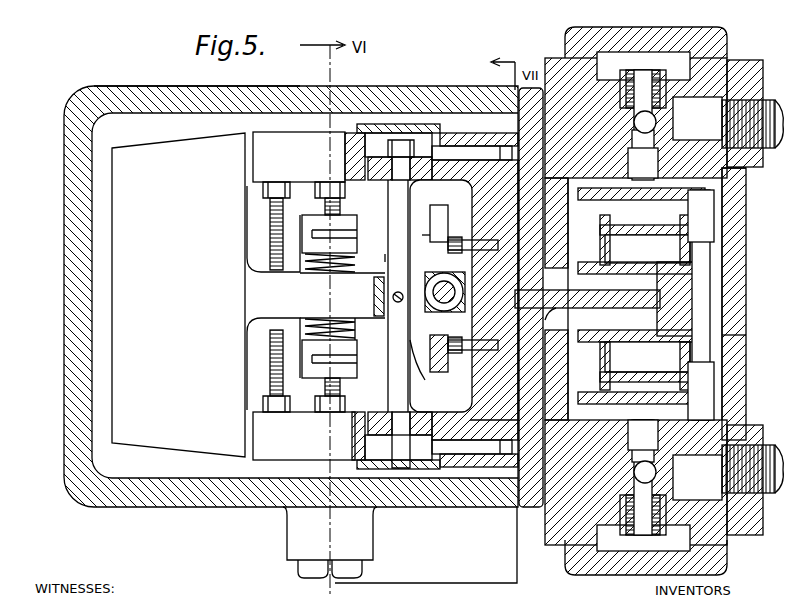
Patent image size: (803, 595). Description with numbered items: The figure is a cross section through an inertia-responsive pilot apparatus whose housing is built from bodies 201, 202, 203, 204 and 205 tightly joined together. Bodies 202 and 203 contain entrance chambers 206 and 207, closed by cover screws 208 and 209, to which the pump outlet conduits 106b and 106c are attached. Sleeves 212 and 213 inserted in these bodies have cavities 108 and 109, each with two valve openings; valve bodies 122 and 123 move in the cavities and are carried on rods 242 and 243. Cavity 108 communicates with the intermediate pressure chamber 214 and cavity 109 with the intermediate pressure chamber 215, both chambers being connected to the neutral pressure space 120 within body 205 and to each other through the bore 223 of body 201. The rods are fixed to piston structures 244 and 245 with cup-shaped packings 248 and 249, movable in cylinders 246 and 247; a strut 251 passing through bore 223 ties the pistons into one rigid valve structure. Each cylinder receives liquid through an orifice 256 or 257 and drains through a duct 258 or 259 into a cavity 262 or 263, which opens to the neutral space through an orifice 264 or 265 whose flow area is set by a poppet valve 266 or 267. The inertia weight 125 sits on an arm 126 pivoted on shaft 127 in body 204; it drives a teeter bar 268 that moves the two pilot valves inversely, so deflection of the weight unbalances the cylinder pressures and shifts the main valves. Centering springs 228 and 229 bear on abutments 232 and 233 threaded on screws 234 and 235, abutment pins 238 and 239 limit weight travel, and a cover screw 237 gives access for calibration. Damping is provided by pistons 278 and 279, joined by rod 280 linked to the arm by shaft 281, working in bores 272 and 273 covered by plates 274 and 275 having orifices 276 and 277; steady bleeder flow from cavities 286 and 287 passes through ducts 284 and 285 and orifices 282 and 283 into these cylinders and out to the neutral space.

The neutral pressure space 120 is at (238, 118).
The body 205 is at (226, 95).
The inertia weight 125 is at (115, 408).
The body 204 is at (352, 128).
The screw 234 is at (325, 185).
The abutment pin 238 is at (270, 232).
The abutment 232 is at (347, 228).
The centering spring 228 is at (313, 273).
The centering spring 229 is at (308, 330).
The abutment 233 is at (347, 370).
The screw 235 is at (325, 398).
The abutment pin 239 is at (270, 368).
The rod 280 is at (427, 252).
The shaft 281 is at (377, 299).
The arm 126 is at (378, 320).
The bore 272 is at (413, 140).
The orifice 276 is at (380, 126).
The plate 274 is at (400, 130).
The piston 278 is at (407, 171).
The orifice 282 is at (462, 128).
The duct 284 is at (472, 141).
The cavity 286 is at (478, 187).
The poppet valve 266 is at (470, 240).
The teeter bar 268 is at (423, 223).
The orifice 264 is at (482, 255).
The orifice 265 is at (500, 338).
The duct 258 is at (536, 280).
The pivot shaft 127 is at (440, 345).
The poppet valve 267 is at (431, 368).
The cavity 287 is at (494, 435).
The piston 279 is at (348, 428).
The orifice 277 is at (375, 468).
The plate 275 is at (405, 470).
The bore 273 is at (422, 452).
The orifice 283 is at (455, 456).
The duct 285 is at (488, 458).
The cover screw 237 is at (363, 568).
The body 202 is at (548, 70).
The cover screw 208 is at (620, 32).
The entrance chamber 206 is at (660, 60).
The sleeve 212 is at (642, 70).
The valve body 122 is at (640, 120).
The cavity 108 is at (660, 123).
The pump outlet conduit 106b is at (768, 110).
The rod 242 is at (630, 155).
The body 203 is at (550, 530).
The cover screw 209 is at (585, 560).
The entrance chamber 207 is at (640, 548).
The sleeve 213 is at (665, 535).
The valve body 123 is at (640, 470).
The cavity 109 is at (660, 471).
The pump outlet conduit 106c is at (768, 455).
The rod 243 is at (632, 438).
The cavity 262 is at (548, 223).
The cavity 263 is at (543, 350).
The duct 259 is at (542, 325).
The piston structure 244 is at (605, 200).
The cup-shaped packing 248 is at (605, 226).
The cylinder 246 is at (605, 243).
The orifice 256 is at (605, 266).
The bore 223 is at (710, 300).
The orifice 257 is at (605, 344).
The cylinder 247 is at (605, 357).
The piston structure 245 is at (605, 380).
The cup-shaped packing 249 is at (600, 377).
The strut 251 is at (700, 257).
The body 201 is at (738, 228).
The intermediate pressure chamber 214 is at (740, 190).
The intermediate pressure chamber 215 is at (715, 343).